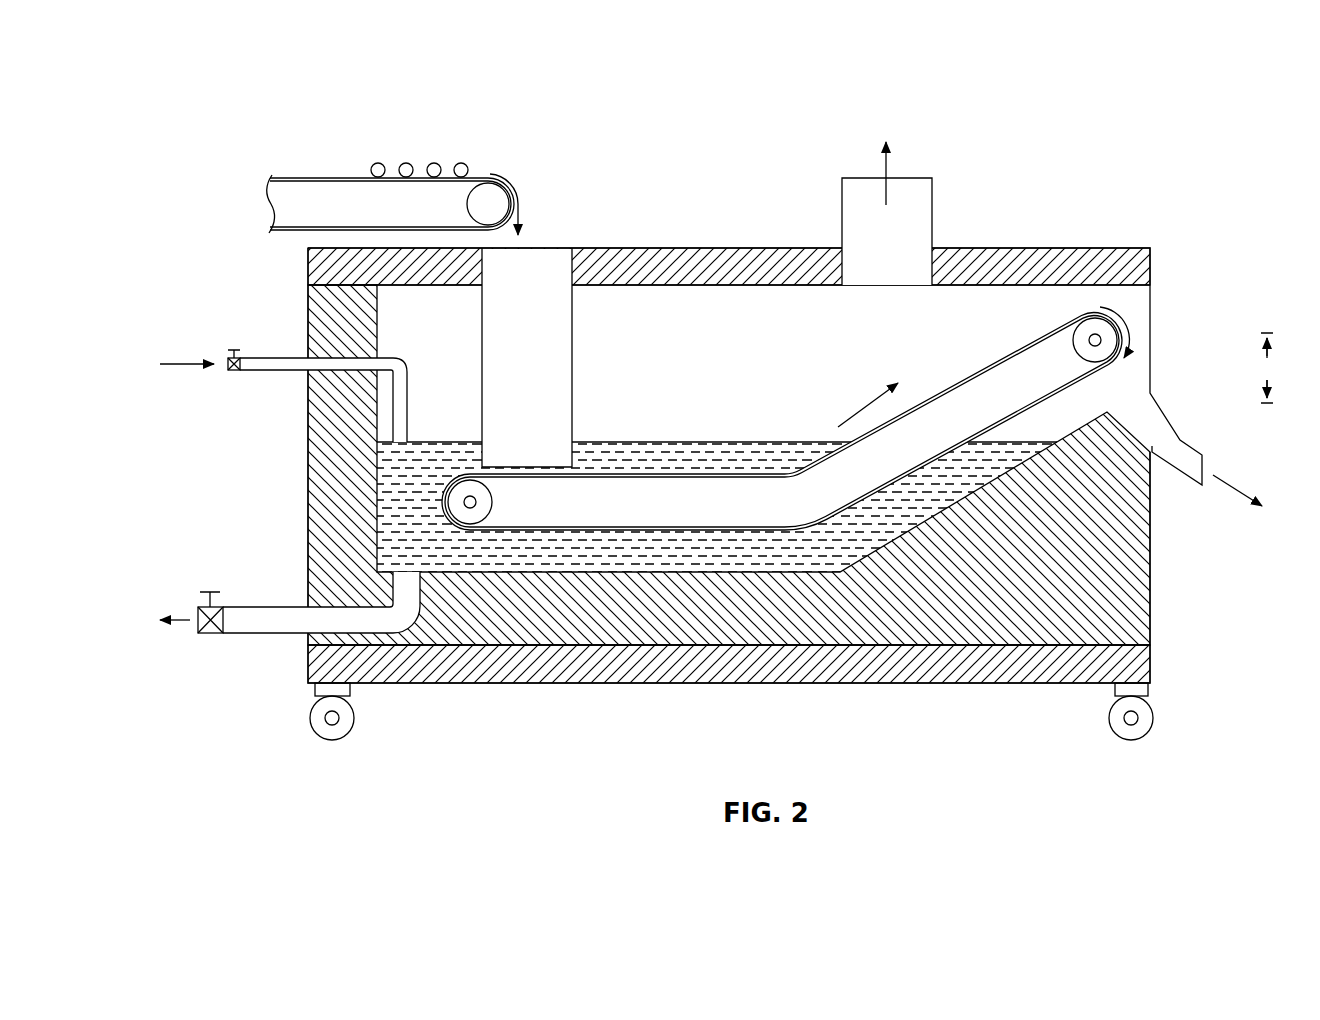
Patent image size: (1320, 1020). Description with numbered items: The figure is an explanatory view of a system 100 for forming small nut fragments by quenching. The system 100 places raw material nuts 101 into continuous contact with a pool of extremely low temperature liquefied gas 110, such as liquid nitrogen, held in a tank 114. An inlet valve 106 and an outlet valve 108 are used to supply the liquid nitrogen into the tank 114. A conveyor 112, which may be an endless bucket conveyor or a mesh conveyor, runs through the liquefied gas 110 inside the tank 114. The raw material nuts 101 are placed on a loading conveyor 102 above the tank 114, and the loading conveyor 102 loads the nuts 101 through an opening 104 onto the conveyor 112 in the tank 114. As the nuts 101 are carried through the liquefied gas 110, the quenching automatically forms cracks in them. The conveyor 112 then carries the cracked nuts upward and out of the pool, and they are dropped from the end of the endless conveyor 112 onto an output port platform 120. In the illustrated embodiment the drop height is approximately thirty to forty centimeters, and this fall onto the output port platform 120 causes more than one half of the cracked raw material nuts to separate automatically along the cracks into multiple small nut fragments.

The system 100 is at (225, 62).
The raw material nuts 101 is at (462, 135).
The loading conveyor 102 is at (281, 180).
The opening 104 is at (551, 230).
The inlet valve 106 is at (233, 376).
The outlet valve 108 is at (212, 636).
The extremely low temperature liquefied gas 110 is at (500, 558).
The conveyor 112 is at (657, 527).
The tank 114 is at (717, 572).
The output port platform 120 is at (1143, 400).